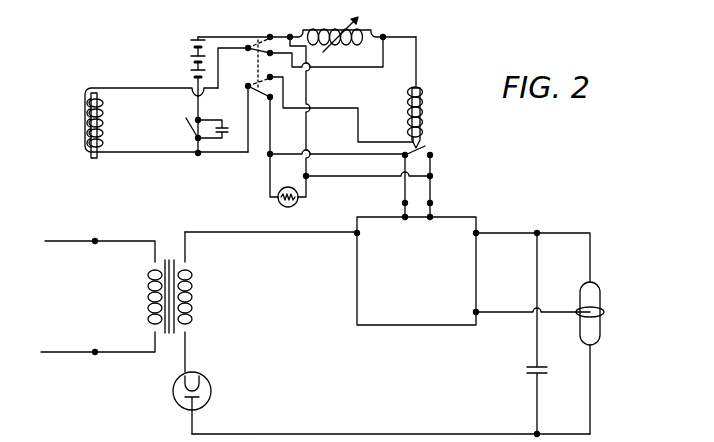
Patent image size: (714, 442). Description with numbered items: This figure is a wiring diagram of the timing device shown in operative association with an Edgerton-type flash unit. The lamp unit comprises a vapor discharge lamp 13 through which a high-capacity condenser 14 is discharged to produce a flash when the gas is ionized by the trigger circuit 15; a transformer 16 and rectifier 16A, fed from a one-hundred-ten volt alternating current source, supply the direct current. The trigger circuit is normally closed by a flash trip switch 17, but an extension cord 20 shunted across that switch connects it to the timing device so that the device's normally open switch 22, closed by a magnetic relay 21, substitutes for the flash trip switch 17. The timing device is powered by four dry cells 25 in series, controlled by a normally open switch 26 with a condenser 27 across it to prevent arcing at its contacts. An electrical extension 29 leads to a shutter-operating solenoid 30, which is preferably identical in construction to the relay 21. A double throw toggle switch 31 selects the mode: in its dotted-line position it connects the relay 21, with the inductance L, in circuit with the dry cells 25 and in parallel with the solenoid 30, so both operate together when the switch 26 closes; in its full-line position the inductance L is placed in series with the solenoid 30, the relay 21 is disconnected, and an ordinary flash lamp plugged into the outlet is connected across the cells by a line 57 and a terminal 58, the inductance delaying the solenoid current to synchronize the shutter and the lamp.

The vapor discharge lamp 13 is at (599, 298).
The condenser 14 is at (527, 371).
The trigger circuit 15 is at (360, 318).
The transformer 16 is at (188, 298).
The rectifier 16A is at (210, 392).
The flash trip switch 17 is at (412, 201).
The extension cord 20 is at (428, 182).
The magnetic relay 21 is at (424, 107).
The normally open switch 22 is at (428, 151).
The dry cells 25 is at (193, 51).
The normally open switch 26 is at (185, 119).
The condenser 27 is at (227, 140).
The electrical extension 29 is at (117, 88).
The solenoid 30 is at (85, 104).
The double throw toggle switch 31 is at (256, 62).
The line 57 is at (307, 134).
The terminal 58 is at (263, 96).
The inductance L is at (376, 29).